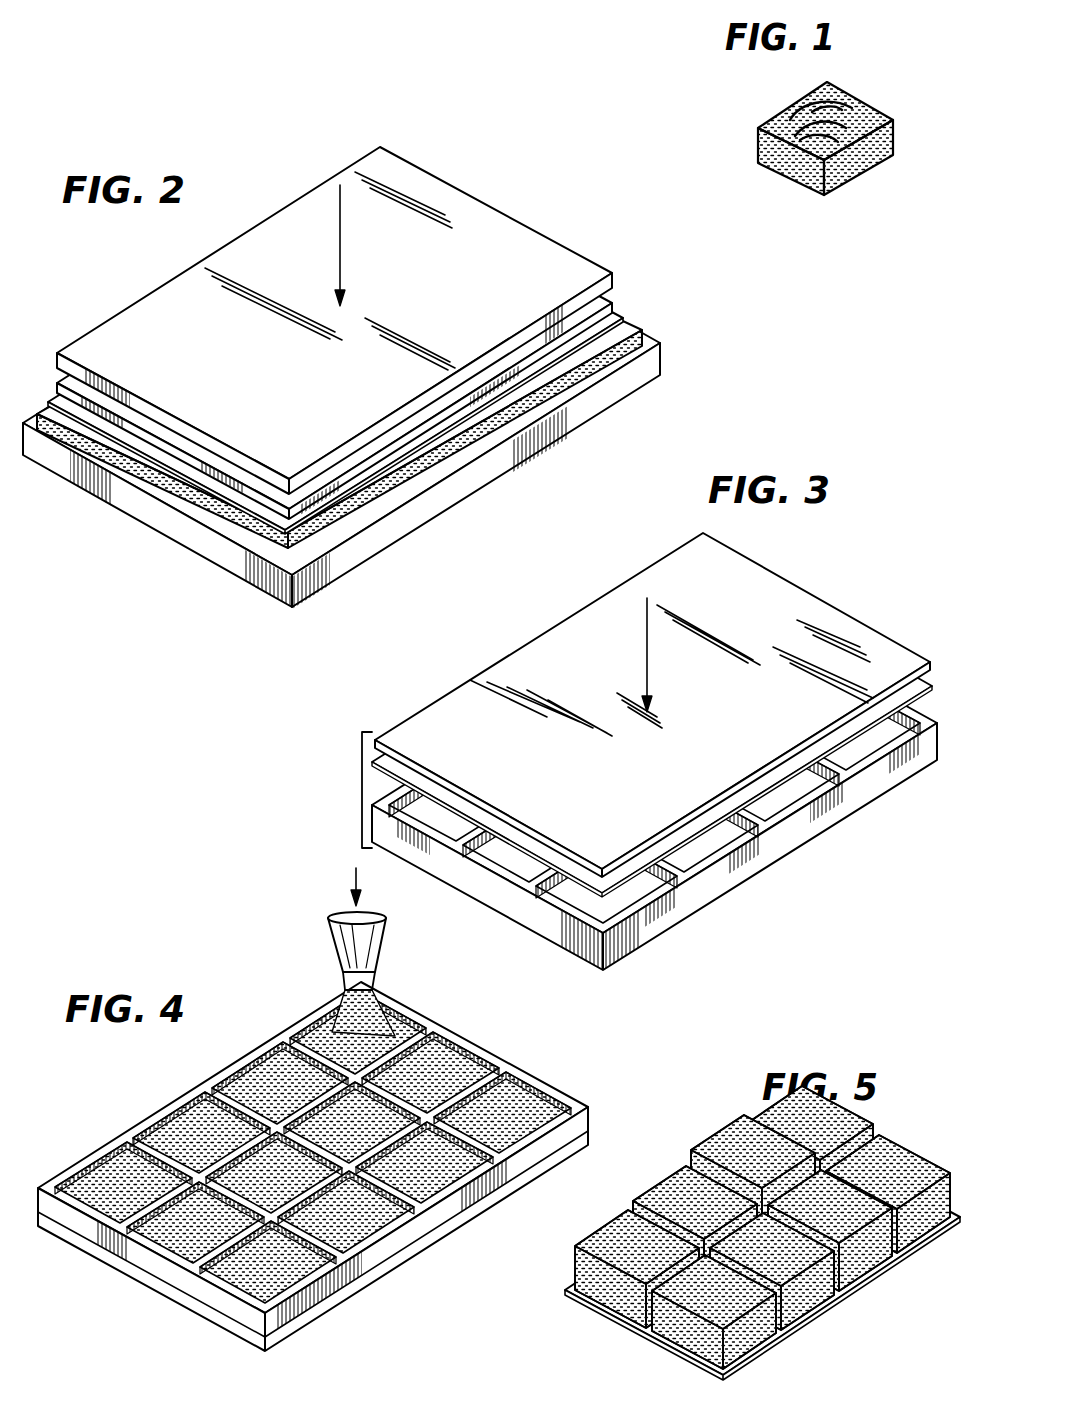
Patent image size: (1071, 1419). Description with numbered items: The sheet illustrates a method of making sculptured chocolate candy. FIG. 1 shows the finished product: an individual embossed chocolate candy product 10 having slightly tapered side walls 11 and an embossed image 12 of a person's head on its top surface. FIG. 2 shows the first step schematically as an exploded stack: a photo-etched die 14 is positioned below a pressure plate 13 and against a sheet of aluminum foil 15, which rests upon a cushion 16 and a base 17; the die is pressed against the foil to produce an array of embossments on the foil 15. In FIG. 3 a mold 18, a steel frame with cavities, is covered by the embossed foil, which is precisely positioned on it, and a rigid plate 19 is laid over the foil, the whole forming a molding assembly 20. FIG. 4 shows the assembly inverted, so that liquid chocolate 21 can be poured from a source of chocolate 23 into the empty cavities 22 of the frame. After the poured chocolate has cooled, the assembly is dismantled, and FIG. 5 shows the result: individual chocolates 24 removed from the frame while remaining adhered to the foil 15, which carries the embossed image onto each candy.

In FIG. 1, the embossed chocolate candy product 10 is at (762, 121).
In FIG. 1, the tapered side walls 11 is at (797, 178).
In FIG. 1, the embossed image 12 is at (806, 100).
In FIG. 2, the pressure plate 13 is at (613, 276).
In FIG. 2, the photo-etched die 14 is at (607, 300).
In FIG. 2, the foil 15 is at (612, 314).
In FIG. 3, the foil 15 is at (613, 883).
In FIG. 5, the foil 15 is at (640, 1333).
In FIG. 2, the cushion 16 is at (622, 332).
In FIG. 2, the base 17 is at (655, 364).
In FIG. 3, the mold 18 is at (670, 917).
In FIG. 3, the rigid plate 19 is at (443, 712).
In FIG. 3, the molding assembly 20 is at (360, 790).
In FIG. 4, the molding assembly 20 is at (588, 1137).
In FIG. 4, the liquid chocolate 21 is at (372, 1018).
In FIG. 4, the cavities 22 is at (306, 1023).
In FIG. 4, the source of chocolate 23 is at (385, 950).
In FIG. 5, the individual chocolates 24 is at (610, 1254).